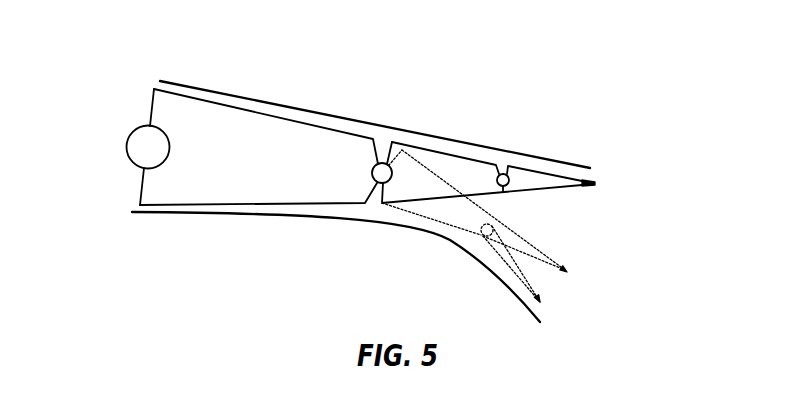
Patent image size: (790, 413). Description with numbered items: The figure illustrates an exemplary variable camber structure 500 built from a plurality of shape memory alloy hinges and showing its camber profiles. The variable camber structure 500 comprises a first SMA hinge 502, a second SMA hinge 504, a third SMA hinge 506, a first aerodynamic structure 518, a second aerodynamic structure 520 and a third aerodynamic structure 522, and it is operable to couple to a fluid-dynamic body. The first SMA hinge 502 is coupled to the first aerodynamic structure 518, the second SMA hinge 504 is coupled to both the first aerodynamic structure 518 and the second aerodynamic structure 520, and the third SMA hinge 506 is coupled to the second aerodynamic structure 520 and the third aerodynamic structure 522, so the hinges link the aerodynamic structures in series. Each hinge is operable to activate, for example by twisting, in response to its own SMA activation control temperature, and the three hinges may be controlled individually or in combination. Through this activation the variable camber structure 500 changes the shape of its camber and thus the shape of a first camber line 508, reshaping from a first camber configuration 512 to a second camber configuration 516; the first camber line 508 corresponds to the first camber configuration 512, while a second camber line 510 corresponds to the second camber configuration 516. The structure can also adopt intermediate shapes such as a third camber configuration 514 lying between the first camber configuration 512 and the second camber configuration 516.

The variable camber structure 500 is at (626, 41).
The first SMA hinge 502 is at (127, 146).
The second SMA hinge 504 is at (372, 201).
The third SMA hinge 506 is at (500, 167).
The first camber line 508 is at (580, 158).
The second camber line 510 is at (508, 295).
The first camber configuration 512 is at (593, 188).
The third camber configuration 514 is at (568, 274).
The second camber configuration 516 is at (541, 304).
The first aerodynamic structure 518 is at (271, 112).
The second aerodynamic structure 520 is at (407, 150).
The third aerodynamic structure 522 is at (542, 157).